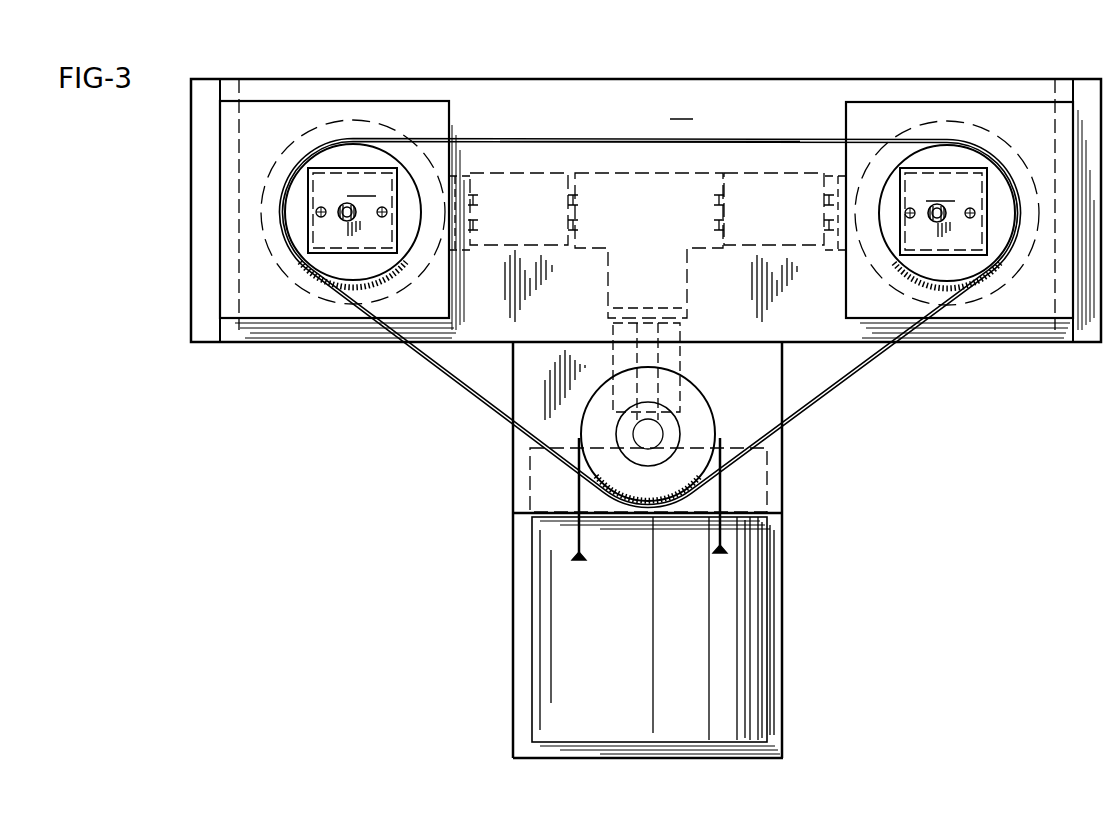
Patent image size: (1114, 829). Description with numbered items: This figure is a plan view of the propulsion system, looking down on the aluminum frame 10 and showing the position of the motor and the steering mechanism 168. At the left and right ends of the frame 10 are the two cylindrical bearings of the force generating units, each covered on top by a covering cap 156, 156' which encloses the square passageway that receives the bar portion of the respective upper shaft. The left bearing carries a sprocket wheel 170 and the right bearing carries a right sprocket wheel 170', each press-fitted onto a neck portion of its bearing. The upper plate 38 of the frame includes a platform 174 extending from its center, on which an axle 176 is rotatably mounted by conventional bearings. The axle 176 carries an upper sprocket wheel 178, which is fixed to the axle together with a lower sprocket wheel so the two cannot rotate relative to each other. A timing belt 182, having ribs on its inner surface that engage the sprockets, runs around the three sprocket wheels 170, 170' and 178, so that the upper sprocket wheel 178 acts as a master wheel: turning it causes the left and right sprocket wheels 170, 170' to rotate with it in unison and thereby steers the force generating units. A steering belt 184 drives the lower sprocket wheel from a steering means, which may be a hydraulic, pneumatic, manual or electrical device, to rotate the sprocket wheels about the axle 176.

The aluminum frame 10 is at (739, 70).
The upper plate 38 is at (646, 249).
The covering cap 156 is at (358, 206).
The covering cap 156' is at (944, 209).
The steering mechanism 168 is at (737, 136).
The sprocket wheel 170 is at (353, 206).
The right sprocket wheel 170' is at (947, 209).
The platform 174 is at (773, 398).
The axle 176 is at (660, 447).
The upper sprocket wheel 178 is at (697, 405).
The timing belt 182 is at (556, 140).
The steering belt 184 is at (717, 543).